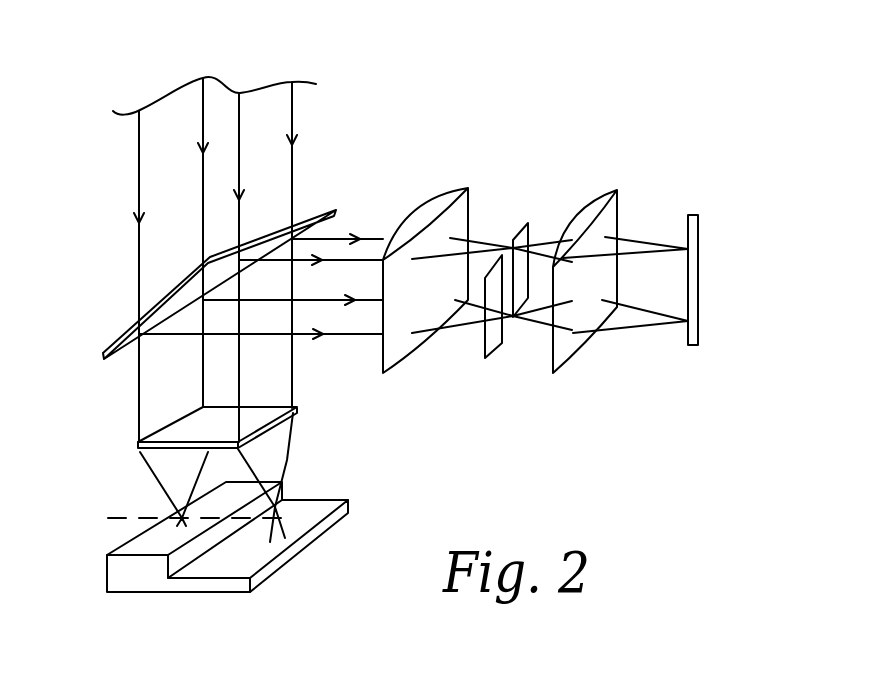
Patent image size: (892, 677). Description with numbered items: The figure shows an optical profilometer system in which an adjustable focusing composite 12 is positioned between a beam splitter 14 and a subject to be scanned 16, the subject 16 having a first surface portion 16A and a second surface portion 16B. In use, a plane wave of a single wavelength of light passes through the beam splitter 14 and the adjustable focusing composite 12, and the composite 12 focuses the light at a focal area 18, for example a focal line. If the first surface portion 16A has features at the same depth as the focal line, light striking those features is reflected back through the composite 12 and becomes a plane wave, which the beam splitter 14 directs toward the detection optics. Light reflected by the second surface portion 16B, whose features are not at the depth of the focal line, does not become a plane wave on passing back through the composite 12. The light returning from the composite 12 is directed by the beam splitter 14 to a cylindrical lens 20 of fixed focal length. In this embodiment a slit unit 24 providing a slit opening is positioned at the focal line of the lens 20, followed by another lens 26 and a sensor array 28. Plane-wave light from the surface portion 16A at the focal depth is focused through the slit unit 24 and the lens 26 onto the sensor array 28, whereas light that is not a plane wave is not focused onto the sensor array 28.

The adjustable focusing composite 12 is at (160, 436).
The beam splitter 14 is at (120, 340).
The subject to be scanned 16 is at (214, 538).
The first surface portion 16A is at (119, 537).
The second surface portion 16B is at (318, 504).
The focal area 18 is at (132, 518).
The cylindrical lens 20 is at (408, 352).
The slit unit 24 is at (528, 222).
The lens 26 is at (617, 198).
The sensor array 28 is at (698, 222).